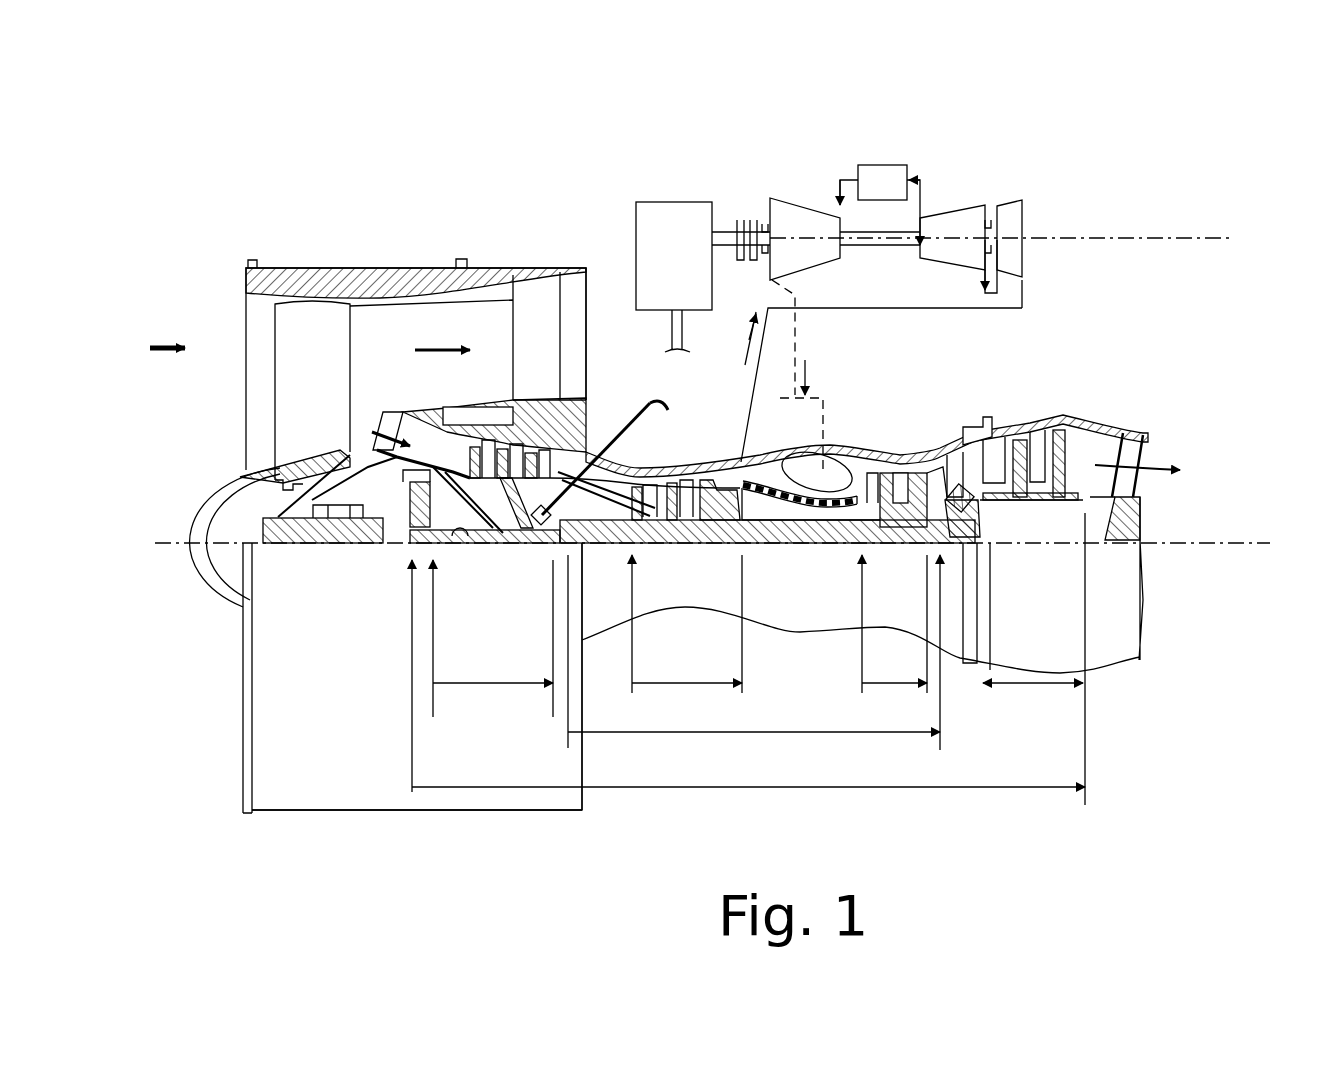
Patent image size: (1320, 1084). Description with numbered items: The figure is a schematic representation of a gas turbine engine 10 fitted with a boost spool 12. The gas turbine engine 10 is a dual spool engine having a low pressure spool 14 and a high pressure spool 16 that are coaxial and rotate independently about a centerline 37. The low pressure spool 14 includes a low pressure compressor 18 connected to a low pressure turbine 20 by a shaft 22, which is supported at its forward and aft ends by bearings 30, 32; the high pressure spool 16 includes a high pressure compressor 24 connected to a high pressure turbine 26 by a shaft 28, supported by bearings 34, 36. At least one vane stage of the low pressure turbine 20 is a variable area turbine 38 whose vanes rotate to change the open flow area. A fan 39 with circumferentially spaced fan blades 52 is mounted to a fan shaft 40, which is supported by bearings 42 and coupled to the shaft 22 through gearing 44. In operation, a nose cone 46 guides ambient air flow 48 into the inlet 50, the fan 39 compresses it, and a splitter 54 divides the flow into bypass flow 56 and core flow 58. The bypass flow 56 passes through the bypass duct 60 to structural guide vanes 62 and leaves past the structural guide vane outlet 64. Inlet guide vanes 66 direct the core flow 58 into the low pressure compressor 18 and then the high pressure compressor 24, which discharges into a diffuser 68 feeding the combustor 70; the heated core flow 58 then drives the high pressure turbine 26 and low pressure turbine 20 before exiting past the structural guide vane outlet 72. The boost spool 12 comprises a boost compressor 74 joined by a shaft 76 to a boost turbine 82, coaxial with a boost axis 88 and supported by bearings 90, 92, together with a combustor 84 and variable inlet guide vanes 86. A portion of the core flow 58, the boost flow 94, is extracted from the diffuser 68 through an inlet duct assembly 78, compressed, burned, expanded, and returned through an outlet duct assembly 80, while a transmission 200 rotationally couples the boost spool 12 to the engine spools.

The gas turbine engine 10 is at (325, 813).
The boost spool 12 is at (1052, 128).
The low pressure spool 14 is at (748, 667).
The high pressure spool 16 is at (754, 660).
The low pressure compressor 18 is at (493, 640).
The low pressure turbine 20 is at (1033, 700).
The shaft 22 is at (455, 536).
The high pressure compressor 24 is at (687, 638).
The high pressure turbine 26 is at (894, 638).
The shaft 28 is at (797, 513).
The bearing 30 is at (500, 528).
The bearing 32 is at (998, 512).
The bearing 34 is at (603, 546).
The bearing 36 is at (942, 540).
The centerline 37 is at (1226, 546).
The variable area turbine 38 is at (1040, 444).
The fan 39 is at (272, 318).
The fan shaft 40 is at (262, 527).
The bearings 42 is at (360, 522).
The gearing 44 is at (392, 562).
The nose cone 46 is at (196, 540).
The ambient air flow 48 is at (162, 340).
The inlet 50 is at (243, 397).
The fan blades 52 is at (295, 405).
The splitter 54 is at (408, 430).
The bypass flow 56 is at (442, 349).
The core flow 58 is at (405, 430).
The bypass duct 60 is at (431, 317).
The structural guide vanes 62 is at (549, 336).
The structural guide vane outlet 64 is at (596, 265).
The inlet guide vanes 66 is at (370, 433).
The diffuser 68 is at (738, 458).
The combustor 70 is at (848, 455).
The structural guide vane outlet 72 is at (1148, 433).
The boost compressor 74 is at (955, 210).
The shaft 76 is at (890, 248).
The inlet duct assembly 78 is at (920, 310).
The outlet duct assembly 80 is at (795, 315).
The boost turbine 82 is at (805, 200).
The combustor 84 is at (880, 165).
The variable inlet guide vanes 86 is at (1023, 210).
The boost axis 88 is at (1185, 243).
The bearing 90 is at (762, 222).
The bearing 92 is at (989, 220).
The boost flow 94 is at (748, 342).
The transmission 200 is at (658, 158).